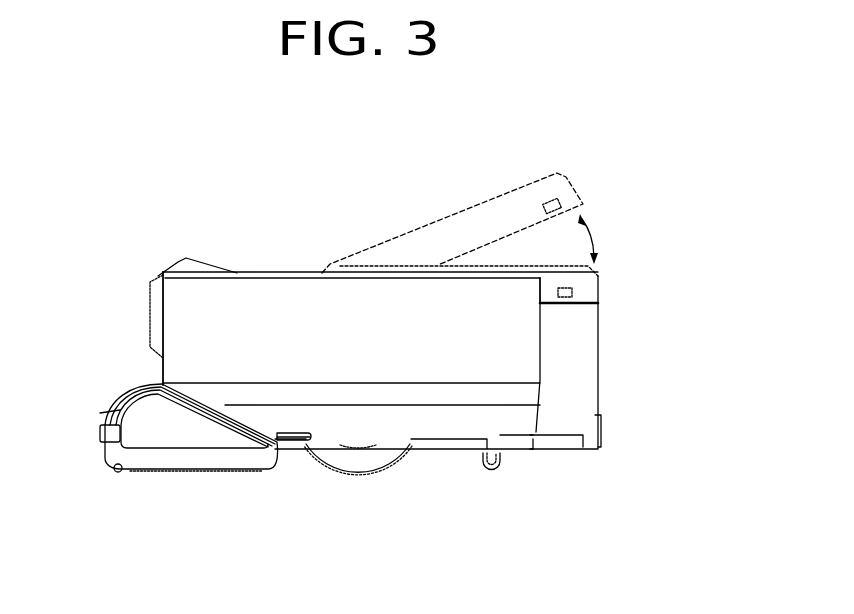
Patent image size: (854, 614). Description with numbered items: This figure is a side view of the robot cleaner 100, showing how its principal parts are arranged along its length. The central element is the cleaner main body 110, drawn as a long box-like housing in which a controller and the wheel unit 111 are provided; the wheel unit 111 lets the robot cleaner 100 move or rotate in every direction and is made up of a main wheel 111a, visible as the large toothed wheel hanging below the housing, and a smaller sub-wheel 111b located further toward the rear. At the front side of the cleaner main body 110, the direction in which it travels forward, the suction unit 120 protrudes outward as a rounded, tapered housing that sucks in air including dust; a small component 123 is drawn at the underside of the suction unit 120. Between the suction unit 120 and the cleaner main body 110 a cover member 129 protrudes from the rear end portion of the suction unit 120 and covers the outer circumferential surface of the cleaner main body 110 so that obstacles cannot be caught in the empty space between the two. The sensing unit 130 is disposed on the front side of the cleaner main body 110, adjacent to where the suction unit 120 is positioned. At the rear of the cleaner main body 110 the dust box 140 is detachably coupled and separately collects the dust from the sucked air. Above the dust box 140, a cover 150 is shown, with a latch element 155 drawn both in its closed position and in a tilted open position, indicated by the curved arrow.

The robot cleaner 100 is at (184, 173).
The cleaner main body 110 is at (313, 303).
The wheel unit 111 is at (464, 546).
The main wheel 111a is at (380, 473).
The sub-wheel 111b is at (492, 470).
The suction unit 120 is at (207, 432).
The auxiliary wheel 123 is at (117, 474).
The cover member 129 is at (292, 440).
The sensing unit 130 is at (175, 260).
The dust box 140 is at (572, 357).
The cover 150 is at (594, 277).
The cover latch 155 is at (563, 290).